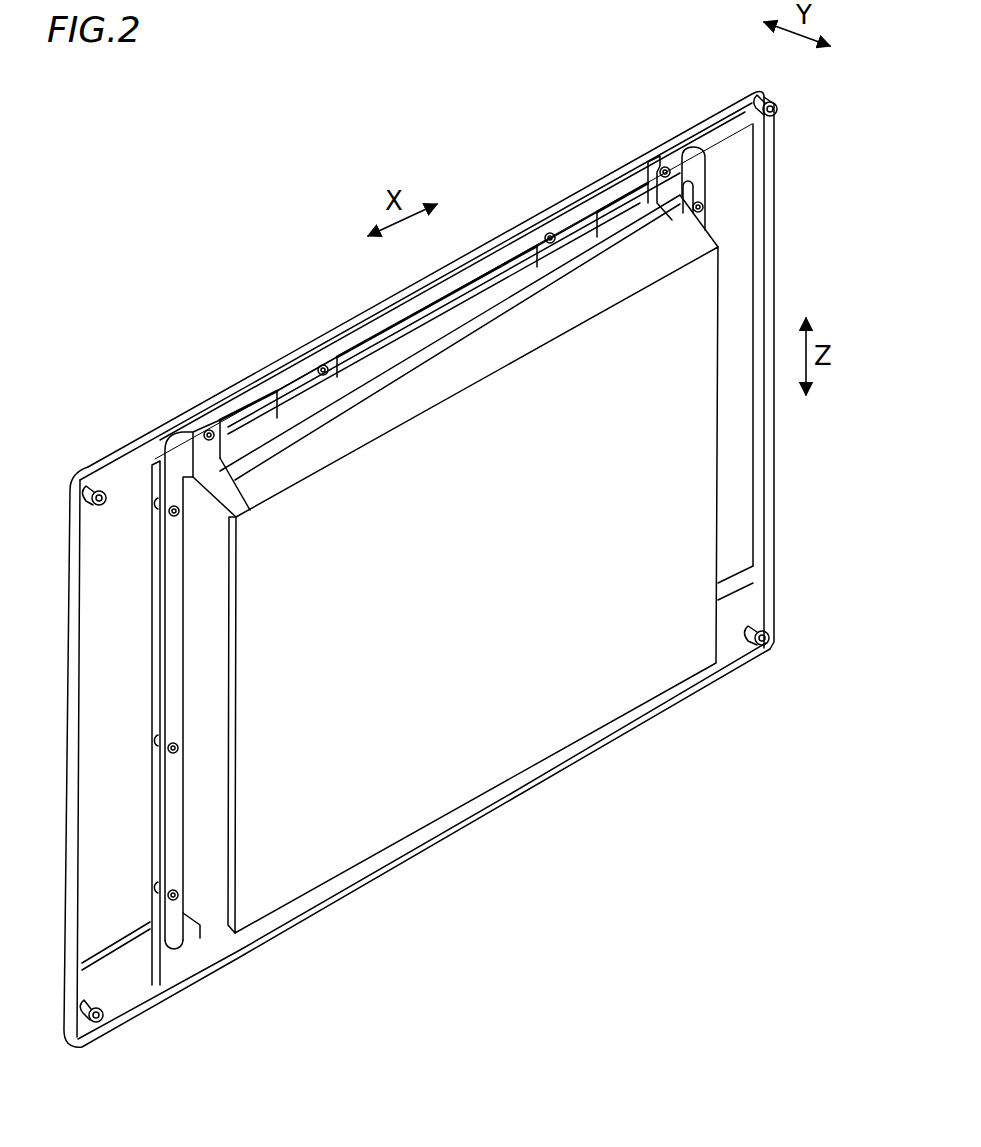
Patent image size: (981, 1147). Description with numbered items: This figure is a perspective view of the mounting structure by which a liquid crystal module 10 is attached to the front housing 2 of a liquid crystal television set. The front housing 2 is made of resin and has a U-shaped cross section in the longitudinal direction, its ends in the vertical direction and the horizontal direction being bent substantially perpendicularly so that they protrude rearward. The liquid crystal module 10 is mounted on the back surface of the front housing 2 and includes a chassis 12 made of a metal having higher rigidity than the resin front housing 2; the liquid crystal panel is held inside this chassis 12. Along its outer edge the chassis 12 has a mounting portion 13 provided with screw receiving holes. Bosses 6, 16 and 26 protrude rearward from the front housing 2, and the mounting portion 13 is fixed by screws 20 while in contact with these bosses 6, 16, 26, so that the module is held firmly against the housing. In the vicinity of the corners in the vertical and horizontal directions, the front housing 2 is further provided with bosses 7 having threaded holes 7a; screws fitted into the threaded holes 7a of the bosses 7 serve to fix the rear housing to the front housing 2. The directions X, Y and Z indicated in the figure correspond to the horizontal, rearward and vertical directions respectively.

The front housing 2 is at (708, 121).
The boss 6 is at (153, 504).
The boss 7 is at (94, 490).
The threaded hole 7a is at (100, 495).
The liquid crystal module 10 is at (398, 406).
The chassis 12 is at (470, 772).
The mounting portion 13 is at (577, 232).
The boss 16 is at (650, 168).
The screw 20 is at (665, 167).
The boss 26 is at (540, 233).